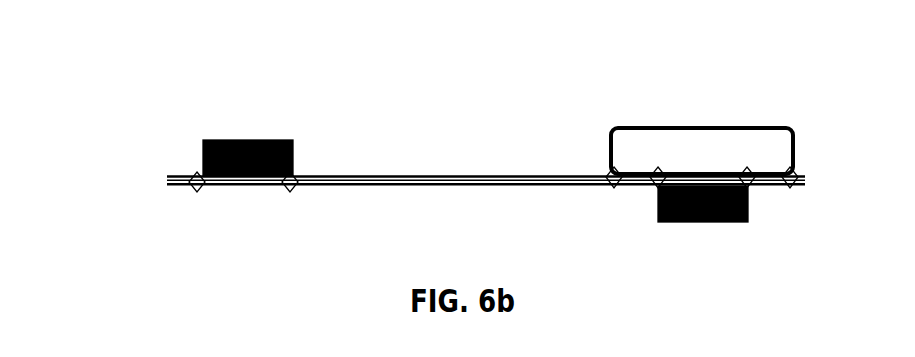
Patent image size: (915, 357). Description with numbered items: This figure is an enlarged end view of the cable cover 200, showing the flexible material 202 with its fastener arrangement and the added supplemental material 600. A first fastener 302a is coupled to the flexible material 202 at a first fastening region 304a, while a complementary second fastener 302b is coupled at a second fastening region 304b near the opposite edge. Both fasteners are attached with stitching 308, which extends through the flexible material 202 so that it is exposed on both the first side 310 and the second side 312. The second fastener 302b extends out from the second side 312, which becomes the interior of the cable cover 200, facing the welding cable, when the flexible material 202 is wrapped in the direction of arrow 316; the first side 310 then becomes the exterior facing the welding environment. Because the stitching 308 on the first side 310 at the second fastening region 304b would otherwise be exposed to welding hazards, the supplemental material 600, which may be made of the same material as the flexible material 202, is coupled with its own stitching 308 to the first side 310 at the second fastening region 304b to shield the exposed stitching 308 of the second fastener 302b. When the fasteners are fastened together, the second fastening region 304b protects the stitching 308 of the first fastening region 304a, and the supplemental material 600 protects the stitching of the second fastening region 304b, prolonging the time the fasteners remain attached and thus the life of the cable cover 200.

The cable cover 200 is at (112, 157).
The flexible material 202 is at (480, 174).
The first fastener 302a is at (203, 158).
The second fastener 302b is at (747, 207).
The first fastening region 304a is at (248, 213).
The second fastening region 304b is at (675, 93).
The stitching 308 is at (198, 191).
The first side 310 is at (397, 174).
The second side 312 is at (500, 187).
The arrow 316 is at (553, 277).
The supplemental material 600 is at (703, 128).